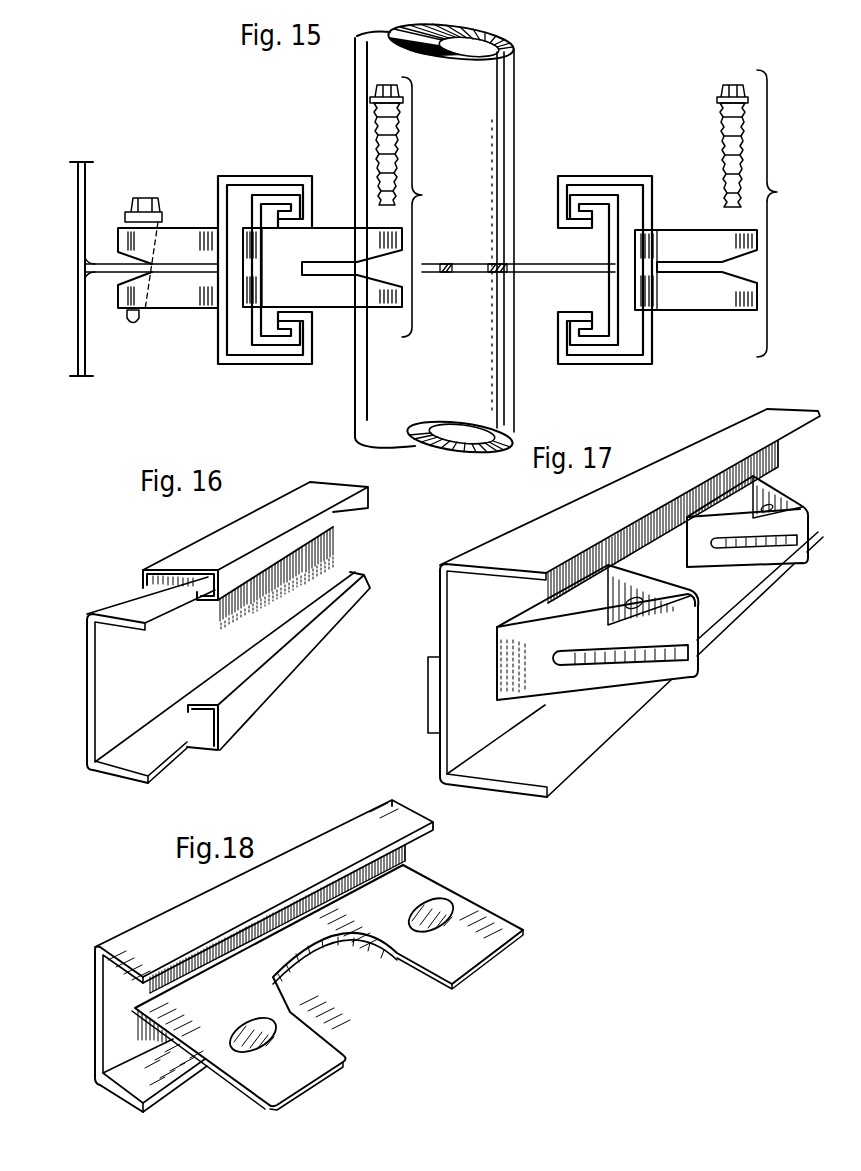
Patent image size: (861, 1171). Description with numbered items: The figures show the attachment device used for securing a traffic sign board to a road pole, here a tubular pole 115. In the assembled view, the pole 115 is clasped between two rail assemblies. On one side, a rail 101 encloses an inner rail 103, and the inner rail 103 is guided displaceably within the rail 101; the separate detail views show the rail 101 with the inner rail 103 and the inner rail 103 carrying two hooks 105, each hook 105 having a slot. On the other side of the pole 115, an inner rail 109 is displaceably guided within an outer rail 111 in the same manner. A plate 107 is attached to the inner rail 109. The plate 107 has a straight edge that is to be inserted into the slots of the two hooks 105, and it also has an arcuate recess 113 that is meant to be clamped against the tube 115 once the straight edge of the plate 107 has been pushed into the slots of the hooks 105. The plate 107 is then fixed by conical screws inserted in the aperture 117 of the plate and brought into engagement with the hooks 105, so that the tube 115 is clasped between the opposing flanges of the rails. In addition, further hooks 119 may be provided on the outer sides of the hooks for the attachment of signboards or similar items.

In FIG. 15, the rail 101 is at (263, 180).
In FIG. 16, the rail 101 is at (270, 678).
In FIG. 15, the inner rail 103 is at (275, 337).
In FIG. 16, the inner rail 103 is at (122, 763).
In FIG. 17, the inner rail 103 is at (475, 568).
In FIG. 15, the hooks 105 is at (358, 293).
In FIG. 17, the hooks 105 is at (758, 555).
In FIG. 15, the plate 107 is at (530, 272).
In FIG. 18, the plate 107 is at (290, 1060).
In FIG. 15, the inner rail 109 is at (595, 202).
In FIG. 18, the inner rail 109 is at (118, 937).
In FIG. 15, the outer rail 111 is at (650, 338).
In FIG. 18, the arcuate recess 113 is at (395, 953).
In FIG. 15, the tubular pole 115 is at (485, 108).
In FIG. 15, the aperture 117 is at (178, 293).
In FIG. 18, the aperture 117 is at (260, 1047).
In FIG. 15, the hooks 119 is at (695, 238).